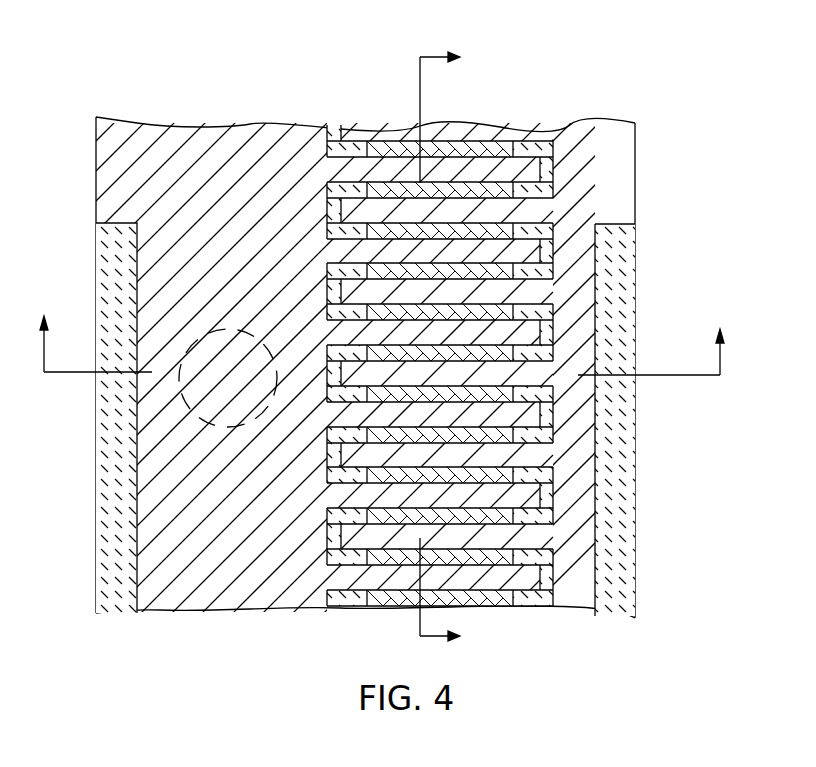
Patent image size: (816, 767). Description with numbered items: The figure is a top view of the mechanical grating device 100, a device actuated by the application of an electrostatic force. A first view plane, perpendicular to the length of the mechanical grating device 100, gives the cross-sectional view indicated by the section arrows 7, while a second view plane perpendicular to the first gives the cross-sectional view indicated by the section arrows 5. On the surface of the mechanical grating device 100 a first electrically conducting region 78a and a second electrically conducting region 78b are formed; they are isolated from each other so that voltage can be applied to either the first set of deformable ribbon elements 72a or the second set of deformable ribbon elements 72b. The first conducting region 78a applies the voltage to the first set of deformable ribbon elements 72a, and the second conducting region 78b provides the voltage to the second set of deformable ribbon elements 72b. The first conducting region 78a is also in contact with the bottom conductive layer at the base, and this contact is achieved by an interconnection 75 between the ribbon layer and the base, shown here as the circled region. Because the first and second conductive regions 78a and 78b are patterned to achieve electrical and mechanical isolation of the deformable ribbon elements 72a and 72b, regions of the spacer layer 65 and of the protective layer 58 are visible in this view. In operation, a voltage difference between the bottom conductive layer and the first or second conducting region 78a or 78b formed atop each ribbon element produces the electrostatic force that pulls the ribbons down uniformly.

The mechanical grating device 100 is at (637, 98).
The protective layer 58 is at (490, 343).
The spacer layer 65 is at (108, 508).
The first set of deformable ribbon elements 72a is at (452, 242).
The second set of deformable ribbon elements 72b is at (398, 290).
The interconnection 75 is at (193, 397).
The first electrically conducting region 78a is at (293, 593).
The second electrically conducting region 78b is at (572, 590).
The cross-sectional view along plane A-A 7 is at (383, 333).
The cross-sectional view along plane B-B 5 is at (447, 349).